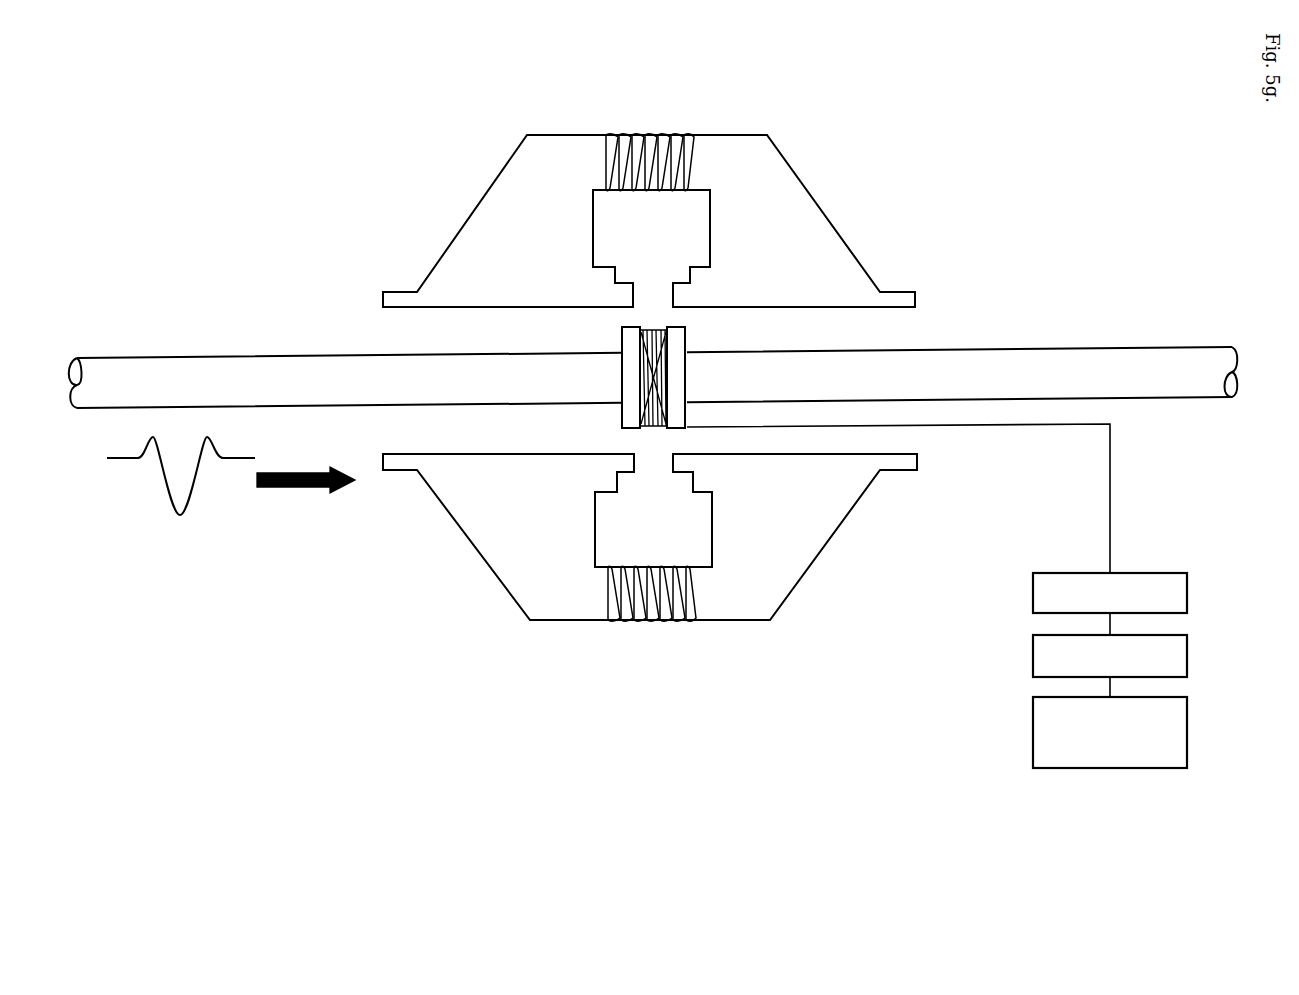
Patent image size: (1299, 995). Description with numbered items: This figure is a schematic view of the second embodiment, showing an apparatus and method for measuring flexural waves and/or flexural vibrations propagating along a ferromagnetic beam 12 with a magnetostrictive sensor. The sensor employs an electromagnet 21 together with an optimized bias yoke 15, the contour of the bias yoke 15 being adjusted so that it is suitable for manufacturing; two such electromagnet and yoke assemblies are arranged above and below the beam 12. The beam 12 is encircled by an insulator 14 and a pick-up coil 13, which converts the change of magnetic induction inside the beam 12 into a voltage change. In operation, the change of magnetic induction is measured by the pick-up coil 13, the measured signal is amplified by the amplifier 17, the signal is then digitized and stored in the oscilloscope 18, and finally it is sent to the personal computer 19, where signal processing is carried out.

The ferromagnetic beam 12 is at (1043, 353).
The pick-up coil 13 is at (653, 325).
The insulator 14 is at (620, 340).
The bias yoke 15 is at (502, 173).
The amplifier 17 is at (1187, 593).
The oscilloscope 18 is at (1187, 657).
The personal computer 19 is at (1187, 730).
The electromagnet 21 is at (622, 133).